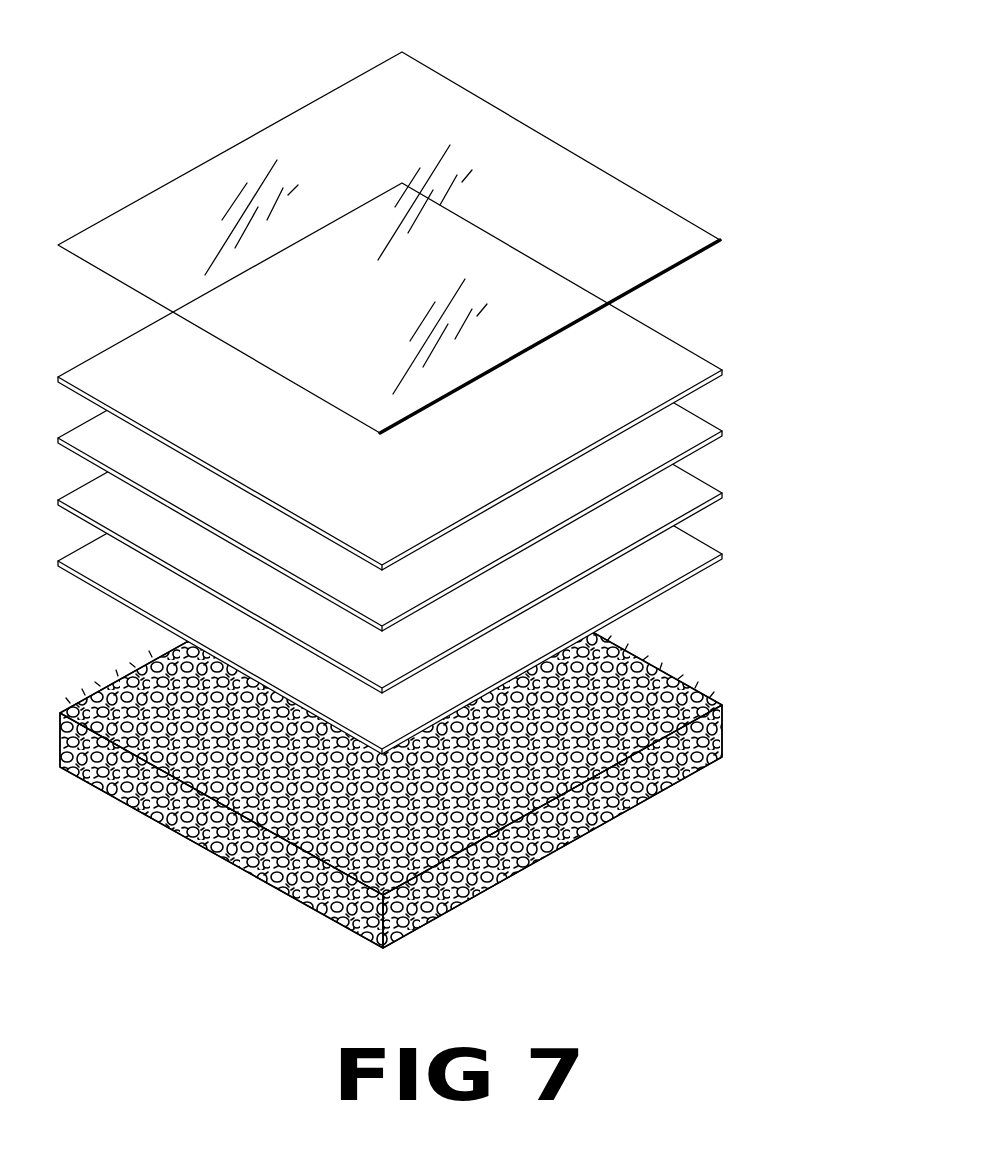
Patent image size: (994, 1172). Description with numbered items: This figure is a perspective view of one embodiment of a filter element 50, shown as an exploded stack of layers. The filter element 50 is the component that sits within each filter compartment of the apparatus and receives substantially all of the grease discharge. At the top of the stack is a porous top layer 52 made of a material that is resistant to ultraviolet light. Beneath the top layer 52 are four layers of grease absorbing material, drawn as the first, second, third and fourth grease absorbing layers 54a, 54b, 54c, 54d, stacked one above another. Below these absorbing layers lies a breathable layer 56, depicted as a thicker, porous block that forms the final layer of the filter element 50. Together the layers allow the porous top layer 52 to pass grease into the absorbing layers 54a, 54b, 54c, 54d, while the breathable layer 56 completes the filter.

The filter element 50 is at (138, 153).
The top layer 52 is at (587, 203).
The grease absorbing layer 54a is at (672, 338).
The grease absorbing layer 54b is at (708, 420).
The grease absorbing layer 54c is at (707, 477).
The grease absorbing layer 54d is at (707, 547).
The breathable layer 56 is at (713, 763).